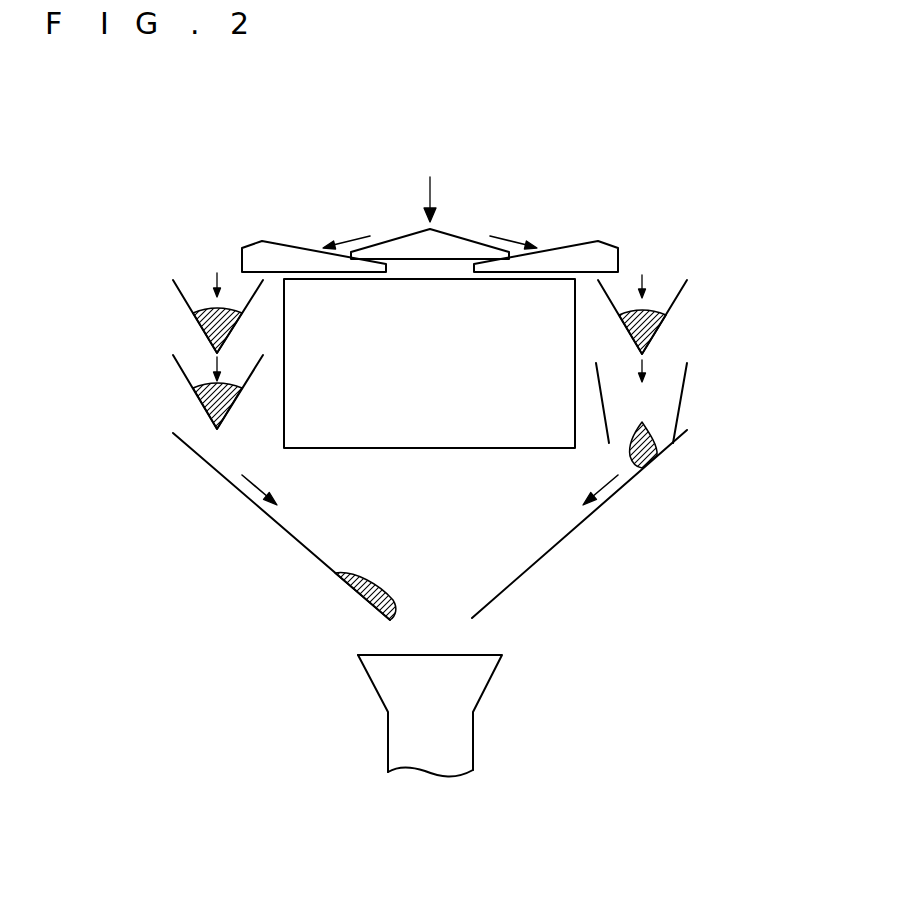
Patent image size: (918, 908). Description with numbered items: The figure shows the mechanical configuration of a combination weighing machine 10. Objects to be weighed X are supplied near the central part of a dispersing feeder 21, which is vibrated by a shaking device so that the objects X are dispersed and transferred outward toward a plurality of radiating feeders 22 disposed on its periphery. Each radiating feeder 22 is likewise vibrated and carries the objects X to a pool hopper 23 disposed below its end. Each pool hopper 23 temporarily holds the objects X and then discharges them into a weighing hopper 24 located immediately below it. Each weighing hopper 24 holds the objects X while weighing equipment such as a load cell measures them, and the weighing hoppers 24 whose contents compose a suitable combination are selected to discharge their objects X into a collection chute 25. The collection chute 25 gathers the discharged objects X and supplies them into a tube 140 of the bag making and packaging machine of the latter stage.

The combination weighing machine 10 is at (658, 276).
The dispersing feeder 21 is at (466, 236).
The radiating feeder 22 is at (295, 248).
The pool hopper 23 is at (183, 299).
The weighing hopper 24 is at (183, 373).
The collection chute 25 is at (564, 543).
The objects to be weighed X is at (376, 580).
The tube 140 is at (477, 680).